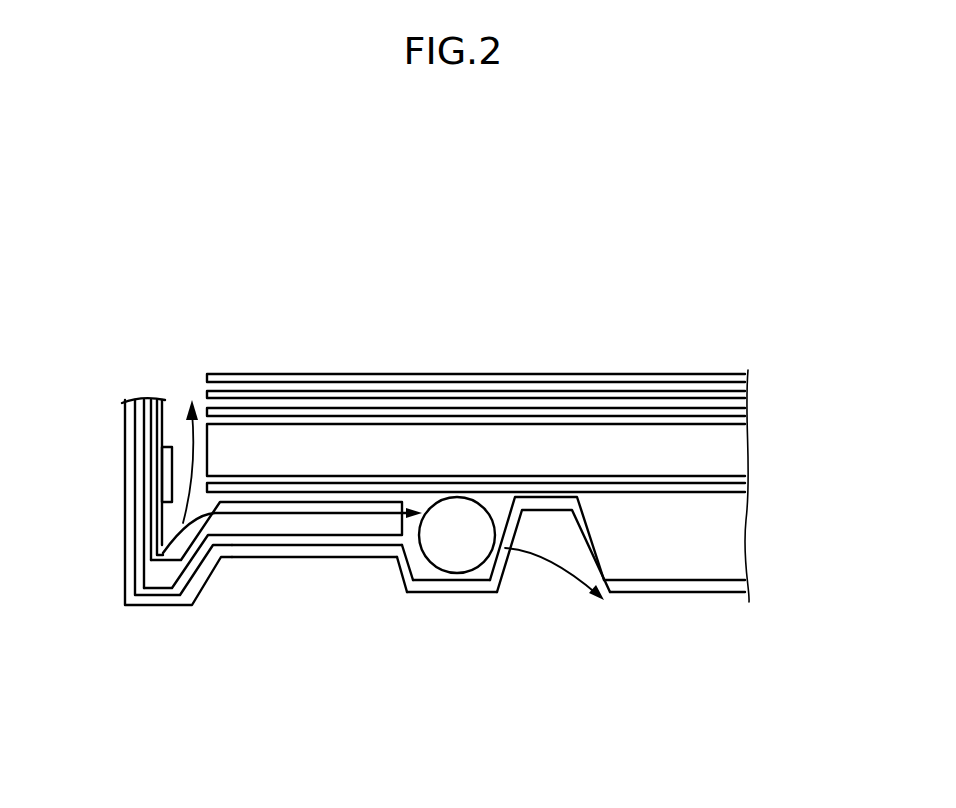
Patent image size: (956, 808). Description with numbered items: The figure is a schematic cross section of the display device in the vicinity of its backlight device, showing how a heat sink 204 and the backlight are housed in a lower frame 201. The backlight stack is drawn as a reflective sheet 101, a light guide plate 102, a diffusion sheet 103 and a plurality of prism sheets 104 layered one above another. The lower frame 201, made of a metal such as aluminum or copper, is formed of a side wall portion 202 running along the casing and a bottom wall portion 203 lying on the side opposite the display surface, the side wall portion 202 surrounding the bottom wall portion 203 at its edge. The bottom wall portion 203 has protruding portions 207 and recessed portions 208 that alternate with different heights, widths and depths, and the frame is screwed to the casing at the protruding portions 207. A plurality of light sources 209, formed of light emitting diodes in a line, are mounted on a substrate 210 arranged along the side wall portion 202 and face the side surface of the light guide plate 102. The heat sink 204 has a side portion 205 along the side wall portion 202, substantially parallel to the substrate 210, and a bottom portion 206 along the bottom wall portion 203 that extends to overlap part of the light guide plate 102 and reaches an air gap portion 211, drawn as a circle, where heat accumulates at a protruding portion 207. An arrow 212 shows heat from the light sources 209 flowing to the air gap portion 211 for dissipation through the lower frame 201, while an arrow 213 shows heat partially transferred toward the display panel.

The reflective sheet 101 is at (740, 490).
The light guide plate 102 is at (740, 455).
The diffusion sheet 103 is at (720, 410).
The prism sheets 104 is at (632, 386).
The lower frame 201 is at (133, 703).
The side wall portion 202 is at (133, 568).
The bottom wall portion 203 is at (172, 606).
The heat sink 204 is at (245, 331).
The side portion 205 is at (147, 424).
The bottom portion 206 is at (256, 500).
The protruding portions 207 is at (251, 548).
The recessed portions 208 is at (362, 558).
The light sources 209 is at (168, 480).
The substrate 210 is at (158, 543).
The air gap portion 211 is at (460, 545).
The arrow 212 is at (297, 513).
The arrow 213 is at (163, 442).